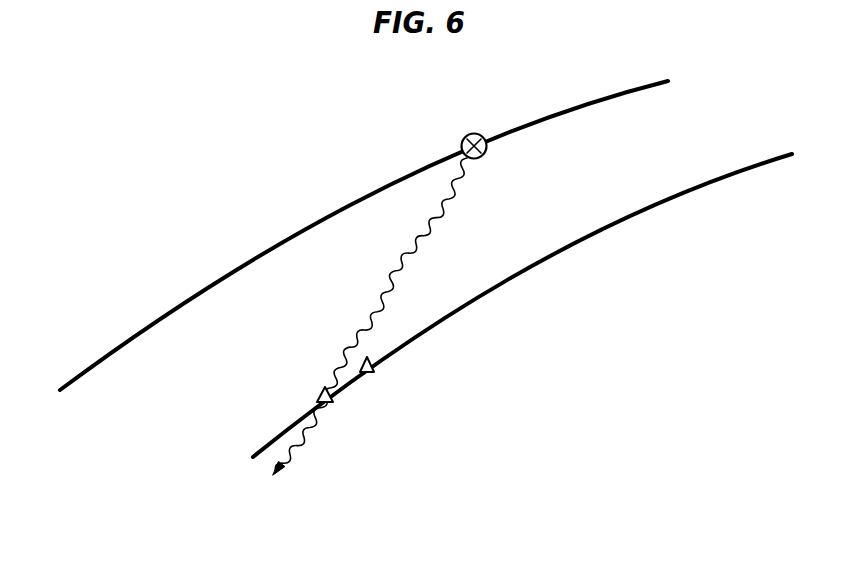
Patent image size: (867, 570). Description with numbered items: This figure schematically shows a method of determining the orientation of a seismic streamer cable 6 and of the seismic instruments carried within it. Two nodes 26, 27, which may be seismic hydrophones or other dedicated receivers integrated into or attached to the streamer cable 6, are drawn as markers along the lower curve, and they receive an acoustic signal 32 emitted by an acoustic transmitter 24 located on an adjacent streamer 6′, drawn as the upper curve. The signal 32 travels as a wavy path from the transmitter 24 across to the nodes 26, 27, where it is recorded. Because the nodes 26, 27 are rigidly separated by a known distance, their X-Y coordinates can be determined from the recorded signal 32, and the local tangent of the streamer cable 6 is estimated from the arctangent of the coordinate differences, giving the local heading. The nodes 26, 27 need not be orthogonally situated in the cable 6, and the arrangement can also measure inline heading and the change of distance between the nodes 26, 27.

The seismic streamer cable 6 is at (633, 218).
The adjacent streamer 6′ is at (543, 118).
The acoustic transmitter 24 is at (464, 138).
The node 26 is at (367, 373).
The node 27 is at (320, 390).
The acoustic signal 32 is at (395, 267).